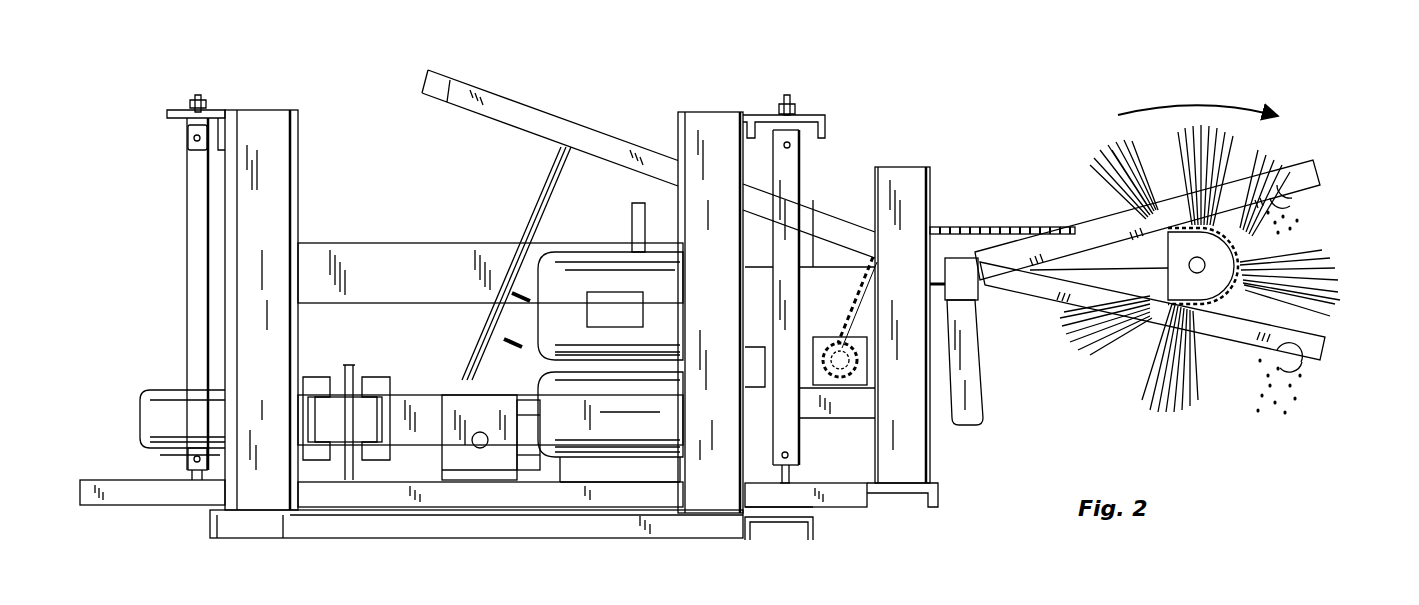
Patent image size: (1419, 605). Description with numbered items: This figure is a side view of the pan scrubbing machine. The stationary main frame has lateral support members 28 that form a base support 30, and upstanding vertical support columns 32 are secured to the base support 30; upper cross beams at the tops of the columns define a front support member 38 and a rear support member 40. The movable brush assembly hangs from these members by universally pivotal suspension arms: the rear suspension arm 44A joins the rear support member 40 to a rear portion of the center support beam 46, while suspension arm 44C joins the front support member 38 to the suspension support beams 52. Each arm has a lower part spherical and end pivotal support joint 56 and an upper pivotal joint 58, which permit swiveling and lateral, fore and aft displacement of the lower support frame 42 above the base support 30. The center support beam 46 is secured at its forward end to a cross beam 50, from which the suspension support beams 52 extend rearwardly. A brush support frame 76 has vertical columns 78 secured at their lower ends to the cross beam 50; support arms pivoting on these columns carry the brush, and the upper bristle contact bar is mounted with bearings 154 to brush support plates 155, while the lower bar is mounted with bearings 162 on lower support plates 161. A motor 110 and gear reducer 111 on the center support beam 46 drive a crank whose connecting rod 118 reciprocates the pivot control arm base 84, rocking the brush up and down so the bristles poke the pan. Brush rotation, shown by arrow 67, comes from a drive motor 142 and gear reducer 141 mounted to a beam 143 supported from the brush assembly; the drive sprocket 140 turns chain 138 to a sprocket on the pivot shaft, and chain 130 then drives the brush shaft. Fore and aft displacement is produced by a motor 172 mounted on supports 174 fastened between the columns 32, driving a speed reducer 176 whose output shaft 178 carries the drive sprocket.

The lateral support members 28 is at (207, 530).
The base support 30 is at (372, 536).
The vertical support columns 32 is at (258, 118).
The front support member 38 is at (810, 118).
The rear support member 40 is at (230, 106).
The lower support frame 42 is at (860, 512).
The rear suspension arm 44A is at (200, 208).
The suspension arm 44C is at (805, 152).
The center support beam 46 is at (126, 490).
The cross beam 50 is at (915, 500).
The suspension support beams 52 is at (826, 510).
The lower pivotal support joint 56 is at (803, 463).
The upper pivotal support joint 58 is at (802, 146).
The arrow 67 is at (1198, 98).
The brush support frame 76 is at (925, 163).
The vertical columns 78 is at (915, 185).
The pivot control arm base 84 is at (540, 107).
The motor 110 is at (595, 412).
The gear reducer 111 is at (466, 395).
The connecting rod 118 is at (538, 203).
The chain 130 is at (962, 230).
The chain 138 is at (745, 360).
The drive sprocket 140 is at (745, 360).
The gear reducer 141 is at (813, 232).
The drive motor 142 is at (597, 255).
The beam 143 is at (988, 437).
The bearings 154 is at (1290, 158).
The brush support plates 155 is at (1322, 172).
The lower support plates 161 is at (1322, 356).
The bearings 162 is at (1332, 340).
The motor 172 is at (157, 403).
The supports 174 is at (398, 252).
The speed reducer 176 is at (317, 378).
The output shaft 178 is at (350, 370).